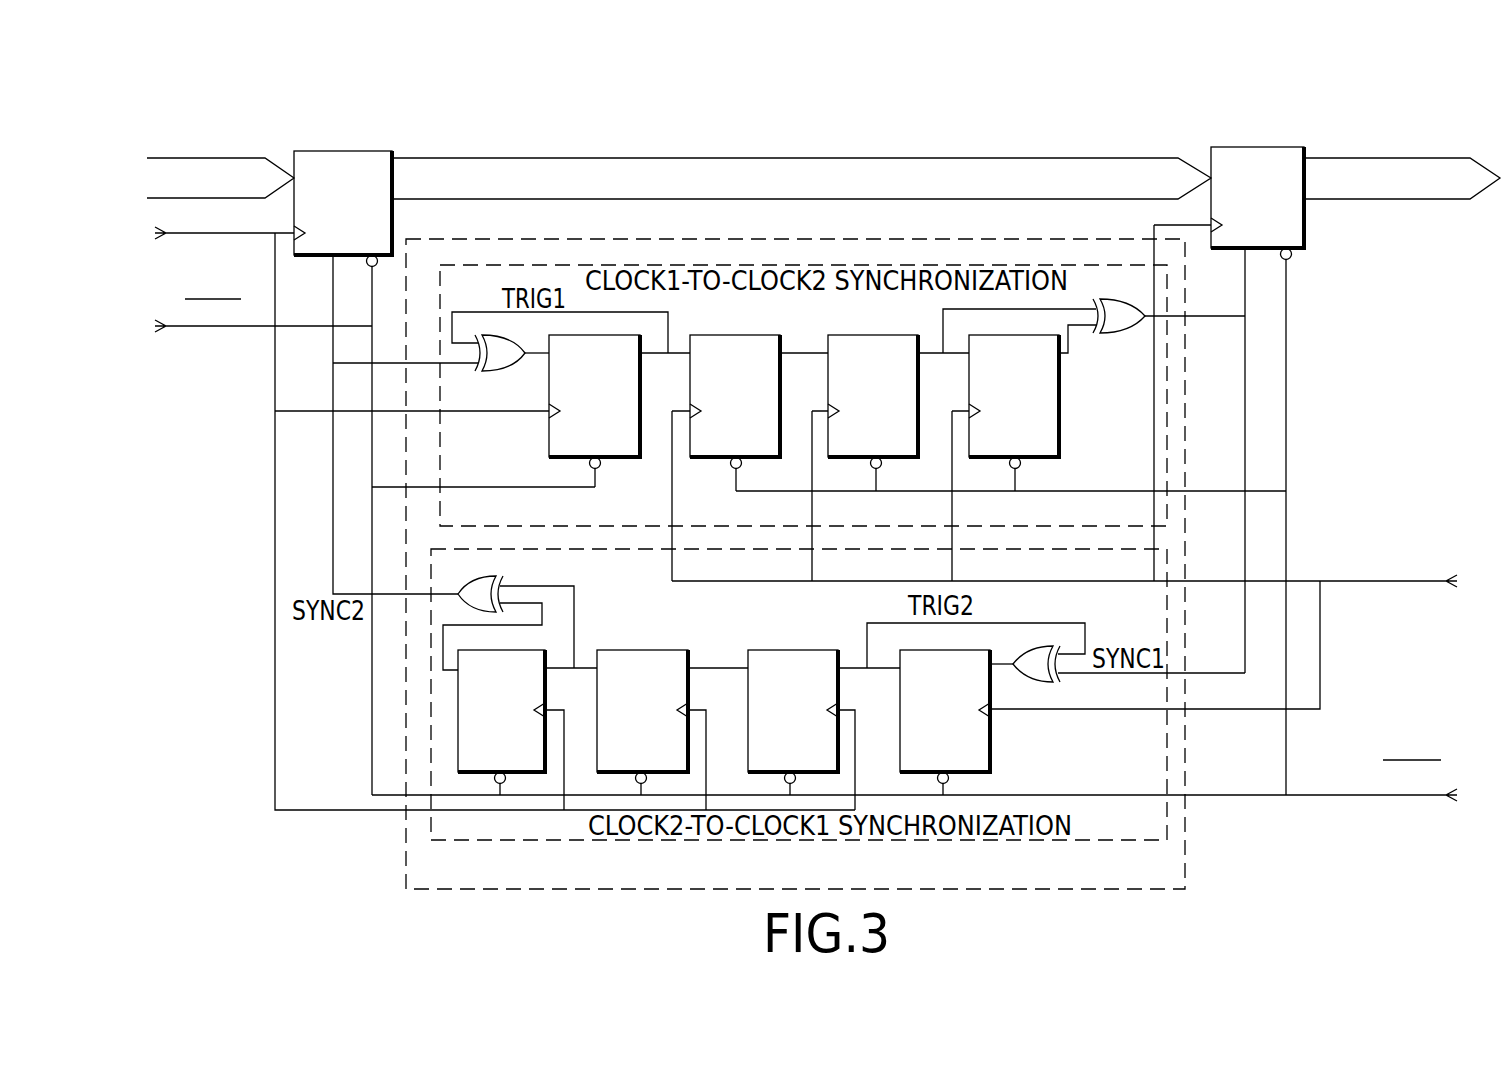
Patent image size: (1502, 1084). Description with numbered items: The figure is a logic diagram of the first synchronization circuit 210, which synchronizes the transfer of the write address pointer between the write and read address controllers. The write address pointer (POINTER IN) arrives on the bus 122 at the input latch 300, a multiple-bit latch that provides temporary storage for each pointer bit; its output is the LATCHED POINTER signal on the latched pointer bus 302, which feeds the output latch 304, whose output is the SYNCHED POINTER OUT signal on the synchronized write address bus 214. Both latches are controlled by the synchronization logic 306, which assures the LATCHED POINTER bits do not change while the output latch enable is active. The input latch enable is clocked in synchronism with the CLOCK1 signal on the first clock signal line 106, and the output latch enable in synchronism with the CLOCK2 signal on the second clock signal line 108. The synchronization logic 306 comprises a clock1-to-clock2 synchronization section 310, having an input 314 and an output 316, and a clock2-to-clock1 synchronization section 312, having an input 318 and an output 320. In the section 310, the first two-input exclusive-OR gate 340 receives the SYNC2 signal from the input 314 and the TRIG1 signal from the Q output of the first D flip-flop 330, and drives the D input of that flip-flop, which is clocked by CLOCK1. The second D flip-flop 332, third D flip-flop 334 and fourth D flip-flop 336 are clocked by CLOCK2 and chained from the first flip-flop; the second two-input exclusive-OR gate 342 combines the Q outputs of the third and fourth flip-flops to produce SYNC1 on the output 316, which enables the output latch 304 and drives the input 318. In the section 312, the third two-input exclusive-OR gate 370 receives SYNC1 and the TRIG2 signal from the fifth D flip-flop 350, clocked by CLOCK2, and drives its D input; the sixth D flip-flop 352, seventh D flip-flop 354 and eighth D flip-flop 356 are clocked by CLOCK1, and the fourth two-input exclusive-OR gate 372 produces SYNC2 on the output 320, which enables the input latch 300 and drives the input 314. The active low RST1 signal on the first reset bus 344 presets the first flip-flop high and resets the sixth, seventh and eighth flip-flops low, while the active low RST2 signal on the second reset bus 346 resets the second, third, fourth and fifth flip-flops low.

The bus 122 is at (208, 157).
The input latch 300 is at (313, 150).
The latched pointer bus 302 is at (770, 158).
The first synchronization circuit 210 is at (917, 139).
The output latch 304 is at (1222, 146).
The synchronized write address bus 214 is at (1340, 157).
The synchronization logic 306 is at (802, 239).
The first clock signal line 106 is at (221, 236).
The first reset bus 344 is at (205, 328).
The input 314 is at (440, 362).
The first two-input exclusive-OR gate 340 is at (503, 373).
The first D flip-flop 330 is at (617, 460).
The second D flip-flop 332 is at (730, 334).
The third D flip-flop 334 is at (850, 333).
The fourth D flip-flop 336 is at (1060, 429).
The second two-input exclusive-OR gate 342 is at (1120, 340).
The output 316 is at (1167, 317).
The clock1-to-clock2 synchronization section 310 is at (1167, 469).
The second clock signal line 108 is at (1355, 584).
The clock2-to-clock1 synchronization section 312 is at (432, 567).
The output 320 is at (427, 598).
The fourth two-input exclusive-OR gate 372 is at (493, 576).
The eighth D flip-flop 356 is at (538, 641).
The seventh D flip-flop 354 is at (645, 650).
The sixth D flip-flop 352 is at (770, 648).
The fifth D flip-flop 350 is at (990, 742).
The third two-input exclusive-OR gate 370 is at (1038, 646).
The input 318 is at (1167, 673).
The second reset bus 346 is at (1345, 797).